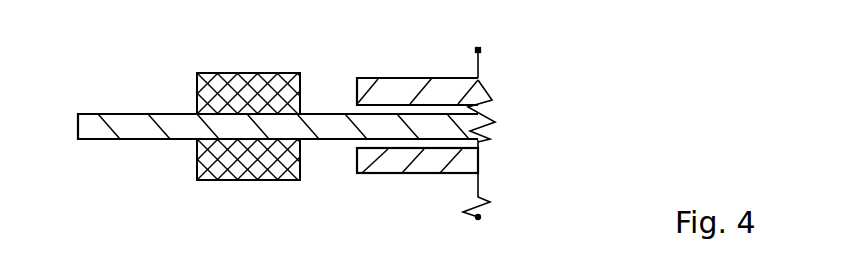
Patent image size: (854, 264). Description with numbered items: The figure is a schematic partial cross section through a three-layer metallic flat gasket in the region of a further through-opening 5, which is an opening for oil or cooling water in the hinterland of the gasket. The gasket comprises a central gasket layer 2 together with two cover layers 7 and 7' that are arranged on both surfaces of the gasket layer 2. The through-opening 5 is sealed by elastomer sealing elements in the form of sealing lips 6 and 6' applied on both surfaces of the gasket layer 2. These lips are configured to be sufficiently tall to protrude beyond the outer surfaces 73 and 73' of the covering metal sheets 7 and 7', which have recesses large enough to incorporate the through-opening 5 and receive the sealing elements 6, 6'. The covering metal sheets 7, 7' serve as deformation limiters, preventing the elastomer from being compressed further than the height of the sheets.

The further through-opening 5 is at (61, 138).
The gasket layer 2 is at (123, 122).
The sealing element 6 is at (247, 72).
The sealing lip 6' is at (247, 180).
The cover layer 7 is at (419, 68).
The outer surface 73 is at (433, 54).
The cover layer 7' is at (418, 184).
The outer surface 73' is at (417, 200).